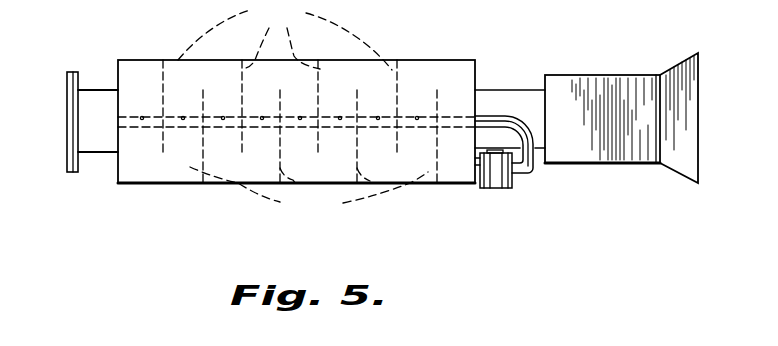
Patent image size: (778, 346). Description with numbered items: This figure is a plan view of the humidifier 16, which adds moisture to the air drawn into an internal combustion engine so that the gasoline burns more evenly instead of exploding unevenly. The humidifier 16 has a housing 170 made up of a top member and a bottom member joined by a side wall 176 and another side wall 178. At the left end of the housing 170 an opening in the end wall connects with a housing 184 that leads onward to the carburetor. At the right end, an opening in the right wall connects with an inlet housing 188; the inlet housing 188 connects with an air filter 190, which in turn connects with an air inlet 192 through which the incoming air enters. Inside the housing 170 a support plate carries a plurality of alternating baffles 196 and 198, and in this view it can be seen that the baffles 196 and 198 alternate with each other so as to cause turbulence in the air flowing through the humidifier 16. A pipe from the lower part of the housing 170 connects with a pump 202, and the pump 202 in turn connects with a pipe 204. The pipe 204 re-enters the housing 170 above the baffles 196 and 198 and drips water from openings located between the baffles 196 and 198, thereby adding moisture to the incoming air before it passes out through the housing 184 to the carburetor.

The humidifier 16 is at (436, 56).
The housing 170 is at (141, 55).
The side wall 176 is at (405, 118).
The side wall 178 is at (232, 62).
The housing 184 is at (90, 97).
The inlet housing 188 is at (507, 89).
The air filter 190 is at (596, 145).
The air inlet 192 is at (680, 153).
The baffle 196 is at (285, 35).
The baffle 198 is at (309, 194).
The pump 202 is at (498, 183).
The pipe 204 is at (540, 113).